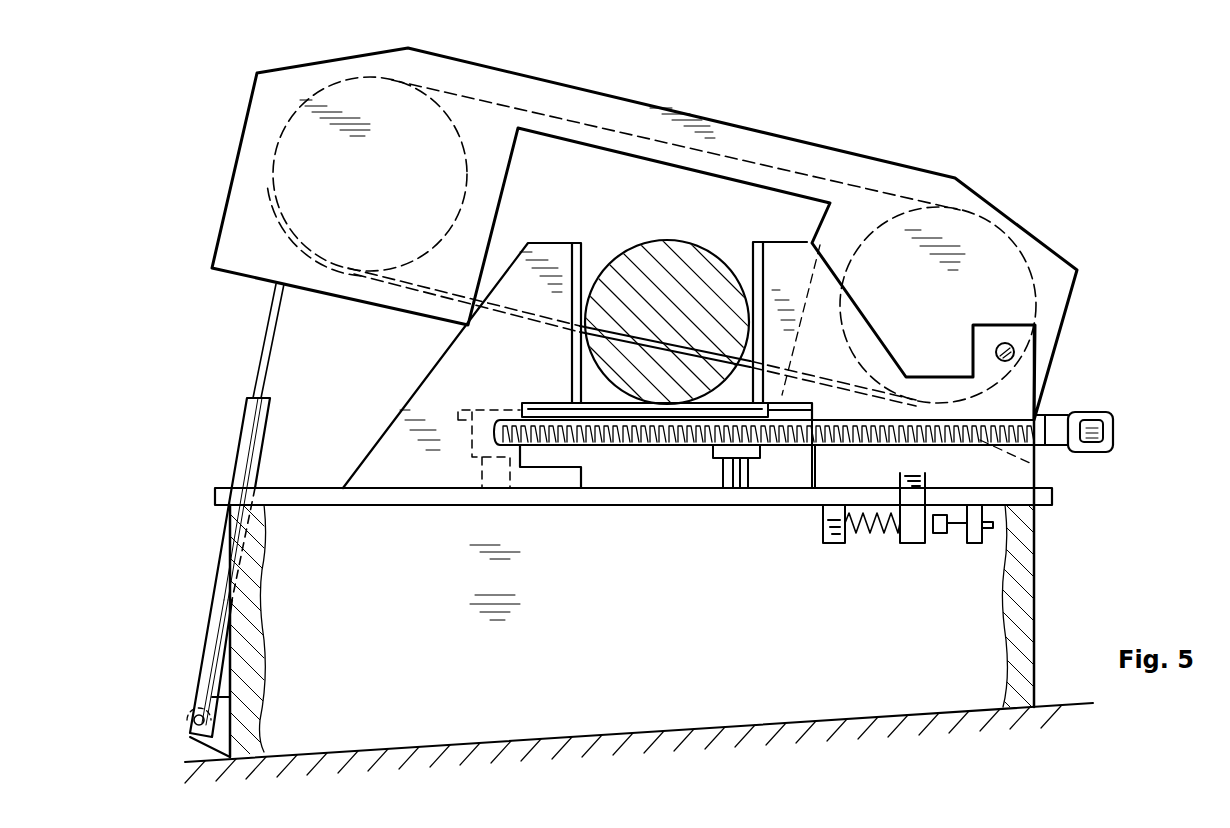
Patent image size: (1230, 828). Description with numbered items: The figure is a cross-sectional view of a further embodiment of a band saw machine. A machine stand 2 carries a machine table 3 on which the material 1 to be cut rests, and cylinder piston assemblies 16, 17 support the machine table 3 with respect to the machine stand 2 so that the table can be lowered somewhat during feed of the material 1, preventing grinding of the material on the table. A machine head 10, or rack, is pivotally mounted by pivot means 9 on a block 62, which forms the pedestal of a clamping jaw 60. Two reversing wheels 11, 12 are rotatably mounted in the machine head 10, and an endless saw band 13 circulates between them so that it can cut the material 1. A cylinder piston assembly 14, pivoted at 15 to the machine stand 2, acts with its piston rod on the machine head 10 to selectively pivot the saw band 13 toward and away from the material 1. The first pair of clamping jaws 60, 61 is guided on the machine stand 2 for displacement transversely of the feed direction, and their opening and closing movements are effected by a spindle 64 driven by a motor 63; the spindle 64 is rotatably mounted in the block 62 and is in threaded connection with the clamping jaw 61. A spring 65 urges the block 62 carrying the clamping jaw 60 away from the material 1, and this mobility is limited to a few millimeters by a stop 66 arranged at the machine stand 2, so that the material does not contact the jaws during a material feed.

The material 1 is at (668, 268).
The machine stand 2 is at (245, 598).
The machine table 3 is at (653, 413).
The pivot means 9 is at (1014, 351).
The machine head 10 is at (487, 78).
The reversing wheel 11 is at (905, 205).
The reversing wheel 12 is at (282, 120).
The saw band 13 is at (603, 315).
The cylinder piston assembly 14 is at (256, 432).
The pivot 15 is at (196, 716).
The cylinder piston assembly 16 is at (490, 470).
The cylinder piston assembly 17 is at (738, 465).
The clamping jaw 60 is at (778, 262).
The clamping jaw 61 is at (458, 358).
The block 62 is at (1040, 466).
The motor 63 is at (1102, 425).
The spindle 64 is at (810, 447).
The spring 65 is at (886, 535).
The stop 66 is at (940, 533).